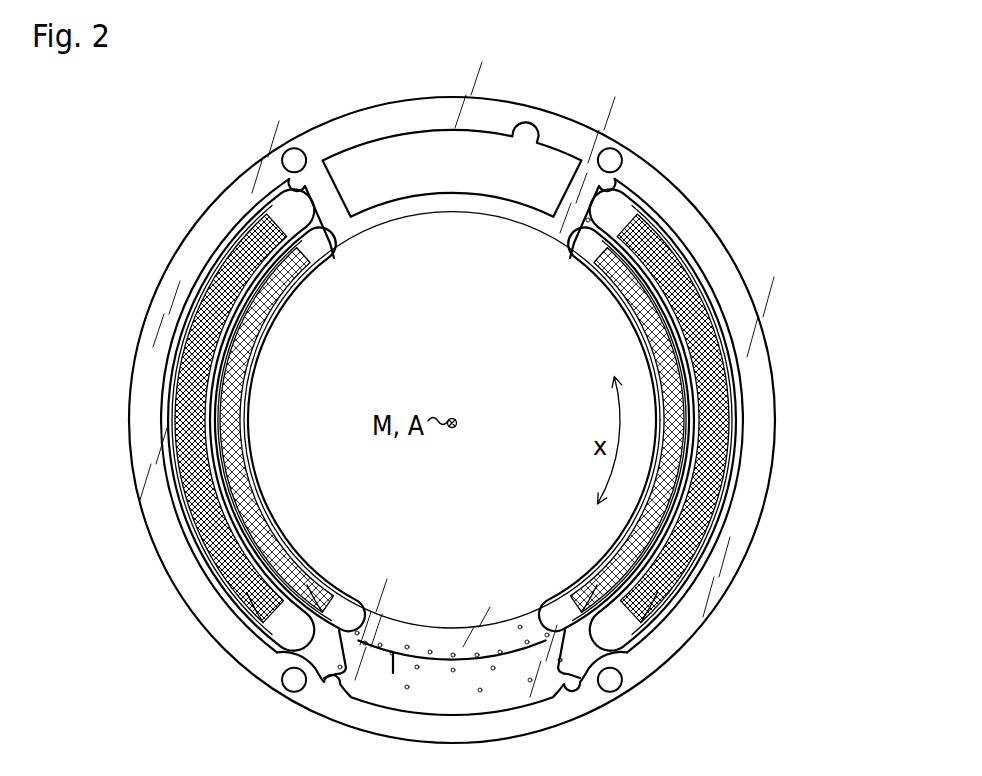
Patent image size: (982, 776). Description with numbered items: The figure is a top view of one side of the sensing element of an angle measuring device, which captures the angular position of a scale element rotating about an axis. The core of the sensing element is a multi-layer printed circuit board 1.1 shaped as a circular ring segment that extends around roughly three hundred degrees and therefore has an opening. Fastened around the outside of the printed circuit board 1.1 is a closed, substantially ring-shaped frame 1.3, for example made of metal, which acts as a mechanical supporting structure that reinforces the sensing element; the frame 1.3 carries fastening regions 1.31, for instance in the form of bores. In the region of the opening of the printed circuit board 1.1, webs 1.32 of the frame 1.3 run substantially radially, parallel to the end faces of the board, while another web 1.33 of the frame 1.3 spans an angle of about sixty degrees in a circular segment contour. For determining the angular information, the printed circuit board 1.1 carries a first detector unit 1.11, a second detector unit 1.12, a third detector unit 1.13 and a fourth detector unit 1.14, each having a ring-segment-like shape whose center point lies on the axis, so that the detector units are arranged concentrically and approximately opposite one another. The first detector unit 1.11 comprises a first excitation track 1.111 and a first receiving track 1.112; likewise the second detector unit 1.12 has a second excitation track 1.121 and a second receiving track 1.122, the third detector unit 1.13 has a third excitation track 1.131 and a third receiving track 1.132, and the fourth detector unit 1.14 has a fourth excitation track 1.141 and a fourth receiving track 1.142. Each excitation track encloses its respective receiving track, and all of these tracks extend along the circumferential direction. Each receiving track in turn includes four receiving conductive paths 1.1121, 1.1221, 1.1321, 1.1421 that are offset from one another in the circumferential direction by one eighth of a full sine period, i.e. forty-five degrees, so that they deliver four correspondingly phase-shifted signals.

The printed circuit board 1.1 is at (549, 689).
The first detector unit 1.11 is at (253, 207).
The first excitation track 1.111 is at (228, 245).
The first receiving track 1.112 is at (210, 300).
The receiving conductive paths 1.1121 is at (243, 628).
The second detector unit 1.12 is at (320, 253).
The second excitation track 1.121 is at (276, 305).
The second receiving track 1.122 is at (258, 338).
The receiving conductive paths 1.1221 is at (332, 607).
The third detector unit 1.13 is at (648, 203).
The third excitation track 1.131 is at (678, 242).
The third receiving track 1.132 is at (688, 298).
The receiving conductive paths 1.1321 is at (665, 625).
The fourth detector unit 1.14 is at (581, 256).
The fourth excitation track 1.141 is at (627, 305).
The fourth receiving track 1.142 is at (653, 340).
The receiving conductive paths 1.1421 is at (565, 605).
The frame 1.3 is at (378, 122).
The fastening regions 1.31 is at (293, 156).
The webs 1.32 is at (330, 195).
The web 1.33 is at (460, 202).